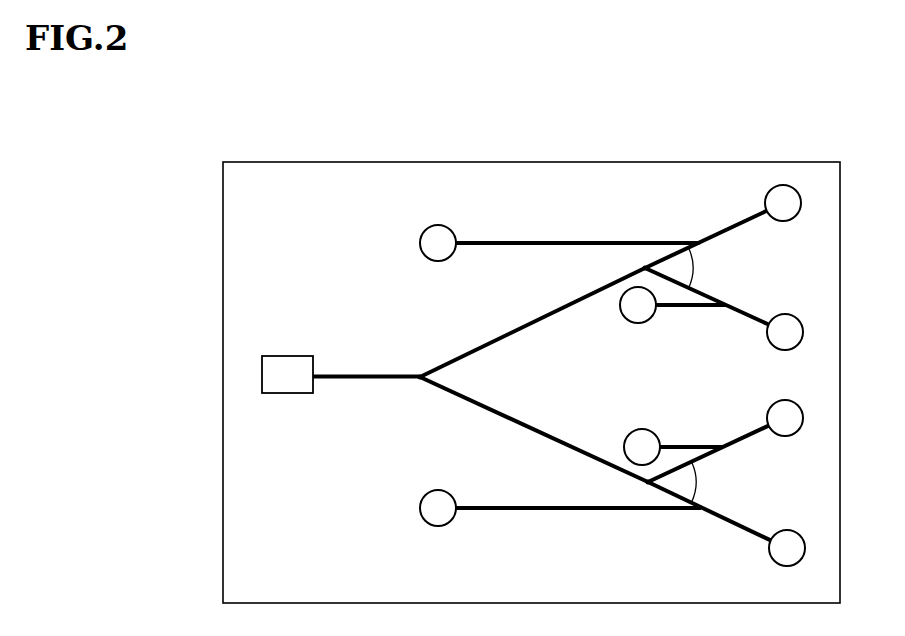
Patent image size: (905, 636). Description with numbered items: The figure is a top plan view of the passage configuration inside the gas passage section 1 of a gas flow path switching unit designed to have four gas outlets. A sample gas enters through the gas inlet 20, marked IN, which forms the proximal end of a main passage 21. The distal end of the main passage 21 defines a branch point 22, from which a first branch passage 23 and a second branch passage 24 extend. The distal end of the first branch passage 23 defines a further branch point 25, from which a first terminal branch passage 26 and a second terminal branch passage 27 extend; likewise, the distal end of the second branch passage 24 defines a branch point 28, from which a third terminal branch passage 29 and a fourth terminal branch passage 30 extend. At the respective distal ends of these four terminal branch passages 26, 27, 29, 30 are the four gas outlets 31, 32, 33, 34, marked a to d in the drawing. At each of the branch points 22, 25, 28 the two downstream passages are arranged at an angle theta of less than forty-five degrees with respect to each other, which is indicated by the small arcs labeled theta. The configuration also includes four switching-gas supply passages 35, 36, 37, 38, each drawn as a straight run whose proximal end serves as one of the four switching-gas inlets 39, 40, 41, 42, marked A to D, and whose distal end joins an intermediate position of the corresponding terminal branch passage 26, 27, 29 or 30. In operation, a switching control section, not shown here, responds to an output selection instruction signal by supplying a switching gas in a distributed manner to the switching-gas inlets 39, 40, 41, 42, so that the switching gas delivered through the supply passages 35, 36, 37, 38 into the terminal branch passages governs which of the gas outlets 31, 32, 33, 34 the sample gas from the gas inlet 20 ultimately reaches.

The gas passage section 1 is at (836, 206).
The gas inlet 20 is at (262, 364).
The main passage 21 is at (363, 375).
The branch point 22 is at (420, 373).
The first branch passage 23 is at (516, 327).
The second branch passage 24 is at (510, 422).
The branch point 25 is at (641, 268).
The first terminal branch passage 26 is at (722, 230).
The second terminal branch passage 27 is at (747, 316).
The branch point 28 is at (645, 482).
The third terminal branch passage 29 is at (743, 436).
The fourth terminal branch passage 30 is at (722, 519).
The gas outlet 31 is at (796, 218).
The gas outlet 32 is at (797, 347).
The gas outlet 33 is at (797, 433).
The gas outlet 34 is at (798, 562).
The switching-gas supply passage 35 is at (557, 240).
The switching-gas supply passage 36 is at (686, 310).
The switching-gas supply passage 37 is at (681, 444).
The switching-gas supply passage 38 is at (556, 513).
The switching-gas inlet 39 is at (426, 230).
The switching-gas inlet 40 is at (627, 319).
The switching-gas inlet 41 is at (629, 433).
The switching-gas inlet 42 is at (428, 494).